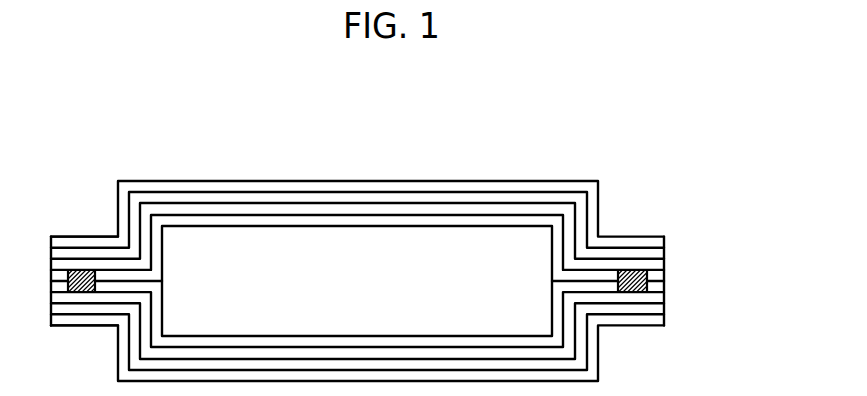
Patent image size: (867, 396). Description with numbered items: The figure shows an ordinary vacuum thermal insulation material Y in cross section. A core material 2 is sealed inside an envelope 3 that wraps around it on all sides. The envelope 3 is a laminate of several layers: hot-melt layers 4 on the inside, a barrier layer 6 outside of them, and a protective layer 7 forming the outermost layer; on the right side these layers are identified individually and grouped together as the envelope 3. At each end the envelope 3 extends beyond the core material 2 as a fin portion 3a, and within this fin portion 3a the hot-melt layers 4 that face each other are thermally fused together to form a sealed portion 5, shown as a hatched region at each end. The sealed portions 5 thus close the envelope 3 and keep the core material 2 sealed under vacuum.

The vacuum thermal insulation material Y is at (158, 130).
The core material 2 is at (320, 260).
The envelope 3 is at (418, 244).
The fin portion 3a is at (114, 222).
The hot-melt layer 4 is at (655, 276).
The sealed portion 5 is at (83, 293).
The barrier layer 6 is at (660, 253).
The protective layer 7 is at (652, 241).